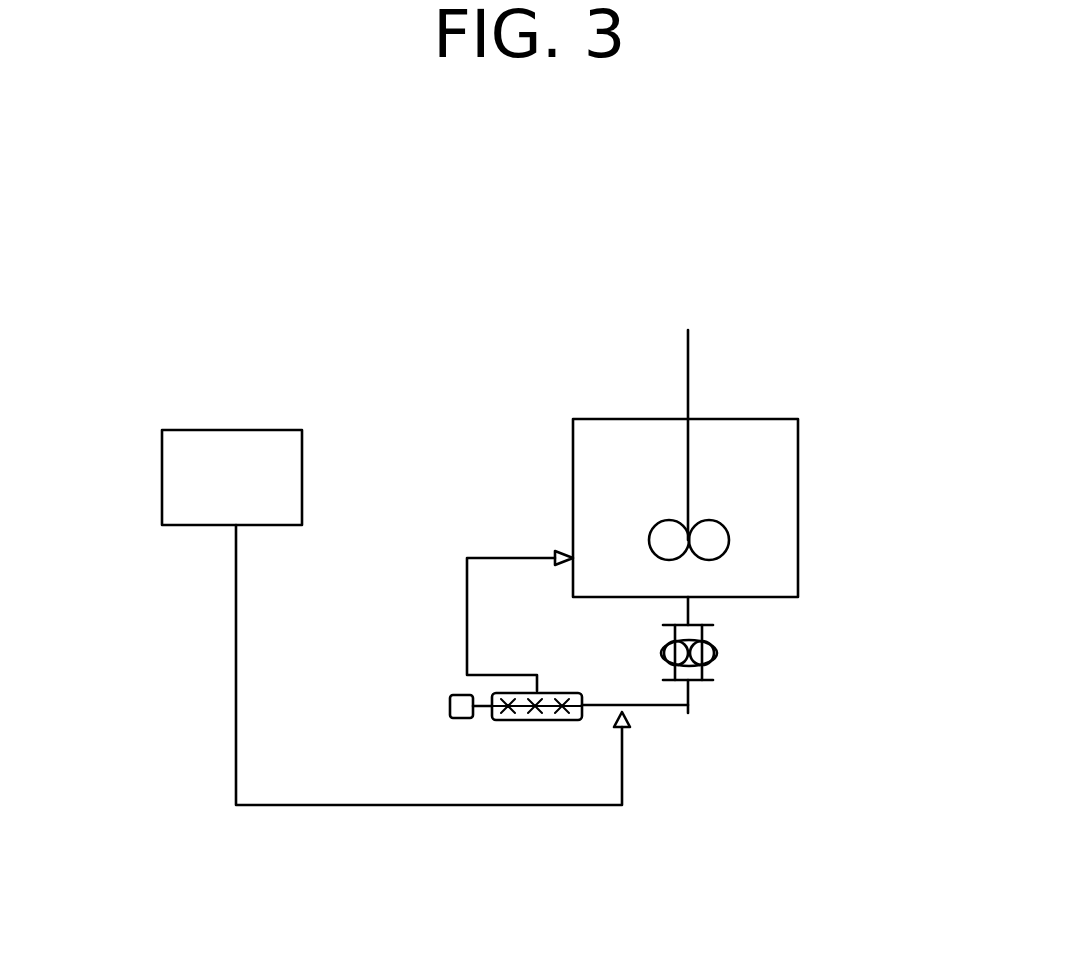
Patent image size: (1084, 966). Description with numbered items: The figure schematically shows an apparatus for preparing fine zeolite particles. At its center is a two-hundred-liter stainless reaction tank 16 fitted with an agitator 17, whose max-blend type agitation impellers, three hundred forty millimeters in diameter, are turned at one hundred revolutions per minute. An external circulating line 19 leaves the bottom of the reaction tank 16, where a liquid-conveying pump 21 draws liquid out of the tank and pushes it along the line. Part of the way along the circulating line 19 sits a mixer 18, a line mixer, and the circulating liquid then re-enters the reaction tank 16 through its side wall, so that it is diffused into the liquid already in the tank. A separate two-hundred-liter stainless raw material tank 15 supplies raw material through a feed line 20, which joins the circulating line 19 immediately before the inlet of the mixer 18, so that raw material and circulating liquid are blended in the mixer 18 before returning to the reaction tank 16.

The raw material tank 15 is at (253, 453).
The reaction tank 16 is at (773, 525).
The agitator 17 is at (692, 387).
The mixer 18 is at (518, 720).
The circulating line 19 is at (467, 595).
The feed line 20 is at (233, 632).
The liquid-conveying pump 21 is at (720, 648).